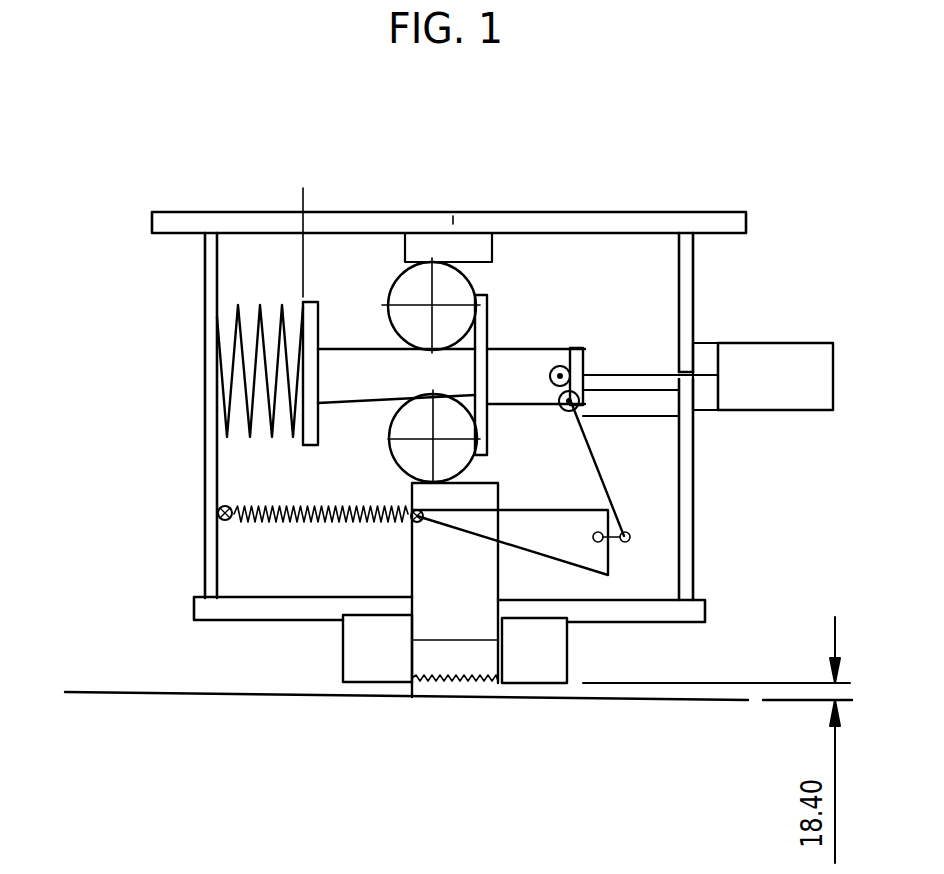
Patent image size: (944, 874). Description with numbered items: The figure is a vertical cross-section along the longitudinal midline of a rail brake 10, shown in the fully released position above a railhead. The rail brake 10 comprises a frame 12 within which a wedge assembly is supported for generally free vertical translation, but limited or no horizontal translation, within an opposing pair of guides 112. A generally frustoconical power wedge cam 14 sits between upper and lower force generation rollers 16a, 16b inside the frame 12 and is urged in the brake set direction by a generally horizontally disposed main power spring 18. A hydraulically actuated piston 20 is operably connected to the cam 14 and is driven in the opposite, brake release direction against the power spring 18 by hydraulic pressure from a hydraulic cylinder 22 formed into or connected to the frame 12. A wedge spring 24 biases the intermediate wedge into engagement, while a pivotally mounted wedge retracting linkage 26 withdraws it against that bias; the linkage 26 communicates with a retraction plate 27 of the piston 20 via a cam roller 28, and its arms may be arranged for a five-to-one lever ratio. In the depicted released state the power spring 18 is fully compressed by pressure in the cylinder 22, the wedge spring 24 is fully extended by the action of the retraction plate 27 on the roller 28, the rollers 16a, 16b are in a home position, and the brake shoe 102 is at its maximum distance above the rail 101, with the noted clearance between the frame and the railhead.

The rail brake 10 is at (228, 128).
The frame 12 is at (650, 210).
The power wedge cam 14 is at (338, 358).
The upper force generation roller 16a is at (408, 292).
The lower force generation roller 16b is at (405, 430).
The main power spring 18 is at (260, 373).
The hydraulically actuated piston 20 is at (717, 360).
The hydraulic cylinder 22 is at (815, 341).
The wedge spring 24 is at (290, 505).
The wedge retracting linkage 26 is at (598, 468).
The retraction plate 27 is at (570, 390).
The cam roller 28 is at (556, 368).
The rail 101 is at (100, 690).
The brake shoe 102 is at (436, 664).
The guides 112 is at (358, 655).